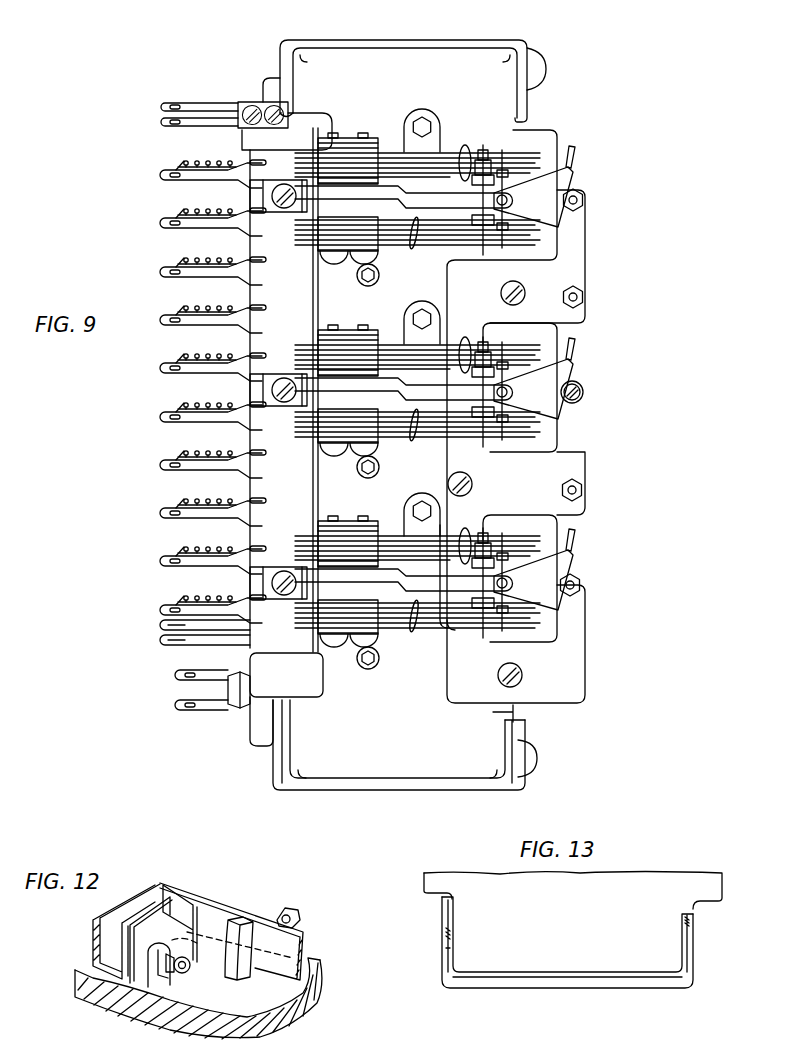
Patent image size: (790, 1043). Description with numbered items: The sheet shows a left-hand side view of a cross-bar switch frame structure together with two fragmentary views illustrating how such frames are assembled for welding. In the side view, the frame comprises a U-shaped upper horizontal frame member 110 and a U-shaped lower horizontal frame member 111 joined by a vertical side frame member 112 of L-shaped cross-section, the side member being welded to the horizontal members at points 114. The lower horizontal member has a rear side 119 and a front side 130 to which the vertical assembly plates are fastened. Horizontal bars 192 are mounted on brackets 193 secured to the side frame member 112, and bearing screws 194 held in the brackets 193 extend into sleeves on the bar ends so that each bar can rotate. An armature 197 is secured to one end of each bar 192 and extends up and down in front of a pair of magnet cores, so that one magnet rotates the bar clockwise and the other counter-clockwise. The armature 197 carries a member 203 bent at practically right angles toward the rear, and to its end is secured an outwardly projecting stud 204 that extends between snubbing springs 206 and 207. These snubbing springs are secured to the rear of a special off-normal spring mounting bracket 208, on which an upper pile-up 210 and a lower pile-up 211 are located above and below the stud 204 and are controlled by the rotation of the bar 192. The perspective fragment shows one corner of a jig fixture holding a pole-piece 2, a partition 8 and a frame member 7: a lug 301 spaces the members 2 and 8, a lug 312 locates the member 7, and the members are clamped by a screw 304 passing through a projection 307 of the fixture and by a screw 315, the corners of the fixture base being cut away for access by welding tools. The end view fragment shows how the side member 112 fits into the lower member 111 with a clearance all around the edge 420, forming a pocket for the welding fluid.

In FIG. 9, the upper horizontal frame member 110 is at (374, 41).
In FIG. 9, the welding points 114 is at (312, 57).
In FIG. 9, the lower horizontal frame member 111 is at (378, 780).
In FIG. 13, the lower horizontal frame member 111 is at (605, 986).
In FIG. 9, the vertical side frame member 112 is at (515, 713).
In FIG. 13, the vertical side frame member 112 is at (632, 876).
In FIG. 9, the bracket 193 is at (575, 266).
In FIG. 9, the bearing screw 194 is at (583, 201).
In FIG. 9, the horizontal bar 192 is at (584, 393).
In FIG. 9, the armature 197 is at (576, 158).
In FIG. 9, the projection of armature 203 is at (560, 184).
In FIG. 9, the stud 204 is at (508, 199).
In FIG. 9, the upper off-normal spring pile-up 210 is at (466, 152).
In FIG. 9, the lower off-normal spring pile-up 211 is at (418, 441).
In FIG. 9, the off-normal spring mounting bracket 208 is at (380, 286).
In FIG. 9, the snubbing spring 206 is at (446, 640).
In FIG. 9, the snubbing spring 207 is at (448, 657).
In FIG. 12, the pole-piece 2 is at (115, 912).
In FIG. 12, the lug 301 is at (137, 925).
In FIG. 12, the partition 8 is at (200, 908).
In FIG. 12, the frame member 7 is at (216, 906).
In FIG. 12, the screw 315 is at (290, 912).
In FIG. 12, the screw 304 is at (186, 970).
In FIG. 12, the projection of jig fixture 307 is at (165, 982).
In FIG. 12, the lug 312 is at (240, 978).
In FIG. 13, the rear side of lower horizontal frame member 119 is at (447, 958).
In FIG. 13, the front side of lower horizontal frame member 130 is at (690, 961).
In FIG. 13, the clearance edge 420 is at (486, 978).